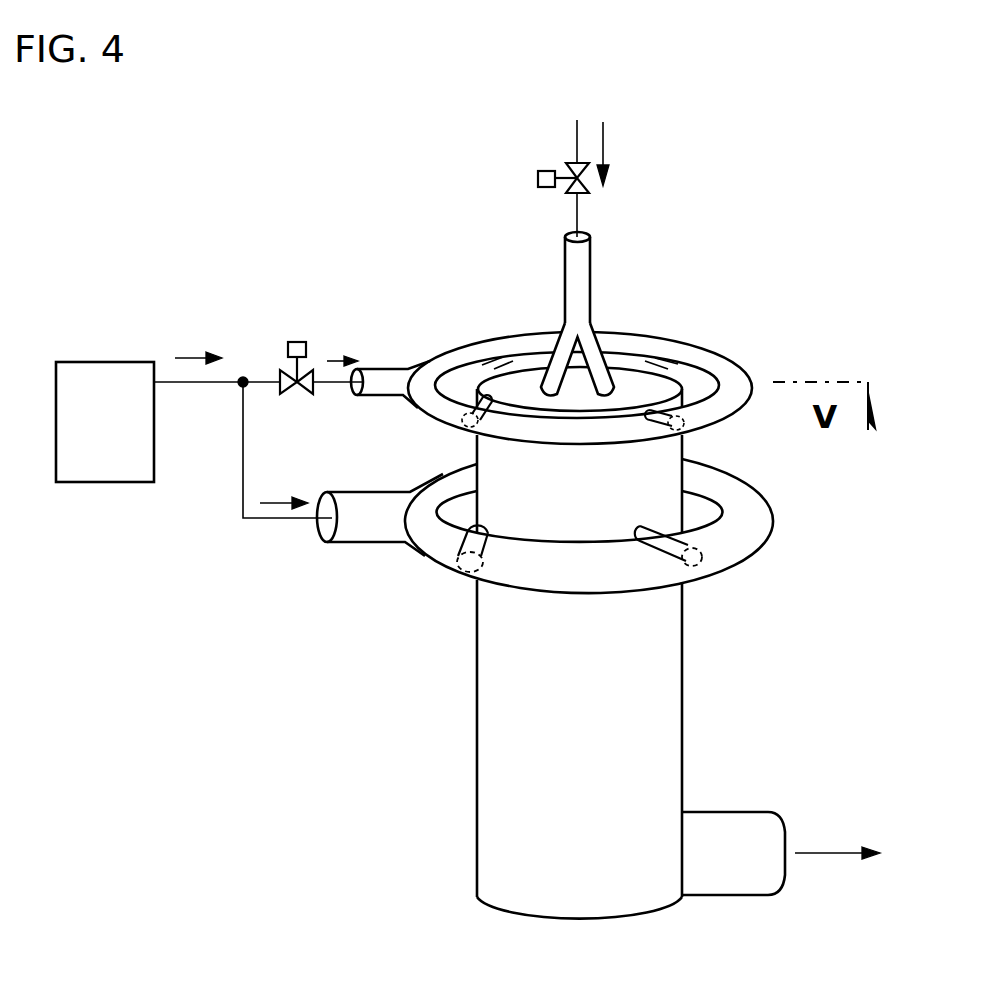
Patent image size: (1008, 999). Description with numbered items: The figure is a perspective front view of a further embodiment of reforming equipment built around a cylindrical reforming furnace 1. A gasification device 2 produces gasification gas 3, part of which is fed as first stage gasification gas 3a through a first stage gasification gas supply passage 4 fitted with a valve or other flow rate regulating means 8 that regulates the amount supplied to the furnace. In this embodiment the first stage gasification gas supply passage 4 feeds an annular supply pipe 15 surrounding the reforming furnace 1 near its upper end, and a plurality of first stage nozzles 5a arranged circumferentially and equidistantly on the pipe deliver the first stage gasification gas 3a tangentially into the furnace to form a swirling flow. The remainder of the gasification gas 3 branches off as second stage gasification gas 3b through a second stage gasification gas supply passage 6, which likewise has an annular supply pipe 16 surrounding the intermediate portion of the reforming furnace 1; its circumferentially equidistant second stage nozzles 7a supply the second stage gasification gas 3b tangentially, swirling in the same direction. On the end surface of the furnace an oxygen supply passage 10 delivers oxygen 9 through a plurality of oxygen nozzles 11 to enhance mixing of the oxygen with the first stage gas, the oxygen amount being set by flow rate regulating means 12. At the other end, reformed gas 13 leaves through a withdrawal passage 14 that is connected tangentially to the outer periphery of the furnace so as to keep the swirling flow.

The reforming furnace 1 is at (458, 788).
The gasification device 2 is at (97, 362).
The gasification gas 3 is at (184, 352).
The first stage gasification gas 3a is at (336, 352).
The second stage gasification gas 3b is at (273, 500).
The first stage gasification gas supply passage 4 is at (263, 380).
The first stage nozzles 5a is at (482, 363).
The second stage gasification gas supply passage 6 is at (276, 522).
The second stage nozzles 7a is at (452, 527).
The flow rate regulating means 8 is at (297, 342).
The oxygen 9 is at (604, 133).
The oxygen supply passage 10 is at (577, 215).
The oxygen nozzles 11 is at (550, 380).
The flow rate regulating means 12 is at (538, 172).
The reformed gas 13 is at (822, 853).
The withdrawal passage 14 is at (745, 812).
The annular supply pipe 15 is at (462, 347).
The annular supply pipe 16 is at (548, 577).